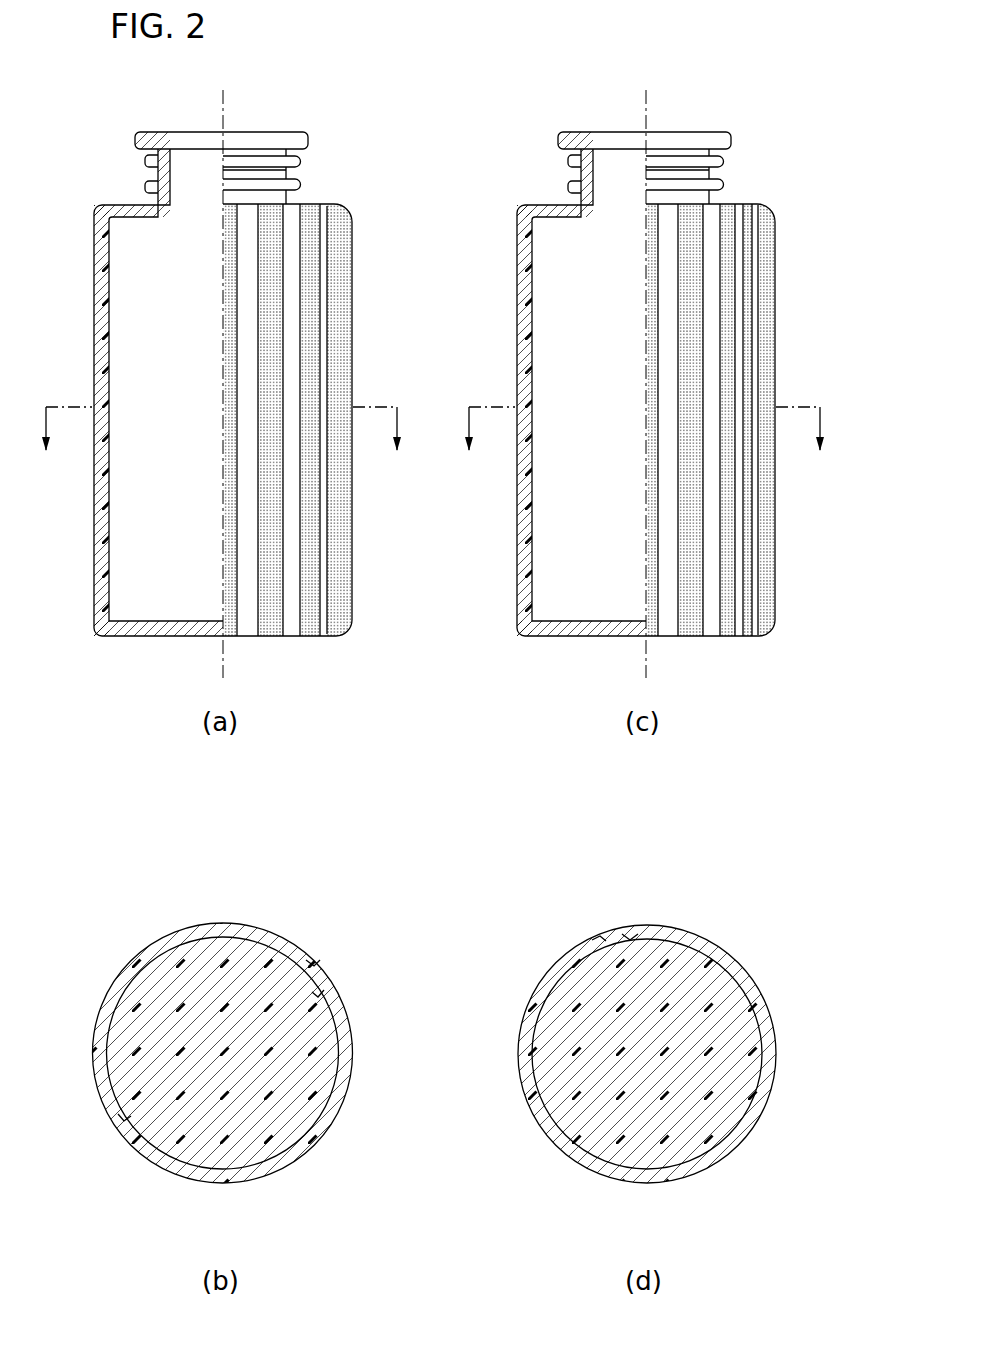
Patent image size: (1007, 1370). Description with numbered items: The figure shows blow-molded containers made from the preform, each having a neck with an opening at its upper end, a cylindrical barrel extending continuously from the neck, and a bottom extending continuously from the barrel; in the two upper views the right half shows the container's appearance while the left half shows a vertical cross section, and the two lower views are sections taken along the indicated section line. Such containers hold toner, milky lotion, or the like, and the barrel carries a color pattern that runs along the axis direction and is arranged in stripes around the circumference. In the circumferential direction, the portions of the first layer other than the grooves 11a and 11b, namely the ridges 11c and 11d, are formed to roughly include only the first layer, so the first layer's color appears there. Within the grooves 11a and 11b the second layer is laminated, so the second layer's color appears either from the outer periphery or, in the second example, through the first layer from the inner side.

The groove 11a is at (315, 962).
The groove 11b is at (600, 937).
The ridge 11c is at (318, 995).
The ridge 11d is at (630, 937).